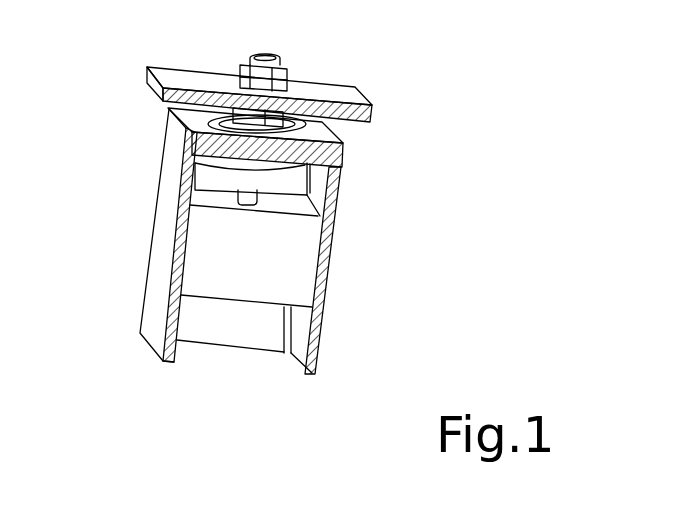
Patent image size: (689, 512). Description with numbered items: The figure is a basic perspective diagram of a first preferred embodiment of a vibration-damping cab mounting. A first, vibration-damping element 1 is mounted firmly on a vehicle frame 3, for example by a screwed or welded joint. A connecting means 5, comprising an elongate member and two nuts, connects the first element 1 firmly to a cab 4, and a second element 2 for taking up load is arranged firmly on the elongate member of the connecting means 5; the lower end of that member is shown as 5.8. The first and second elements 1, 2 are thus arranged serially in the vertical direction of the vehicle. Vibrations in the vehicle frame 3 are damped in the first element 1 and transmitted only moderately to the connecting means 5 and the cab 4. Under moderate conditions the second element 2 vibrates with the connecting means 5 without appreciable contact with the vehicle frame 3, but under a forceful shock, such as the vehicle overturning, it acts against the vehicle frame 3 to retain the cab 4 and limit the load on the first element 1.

The first vibration-damping element 1 is at (290, 262).
The second element 2 is at (292, 182).
The vehicle frame 3 is at (346, 145).
The cab 4 is at (372, 105).
The connecting means 5 is at (291, 62).
The bolt tip 5.8 is at (236, 197).